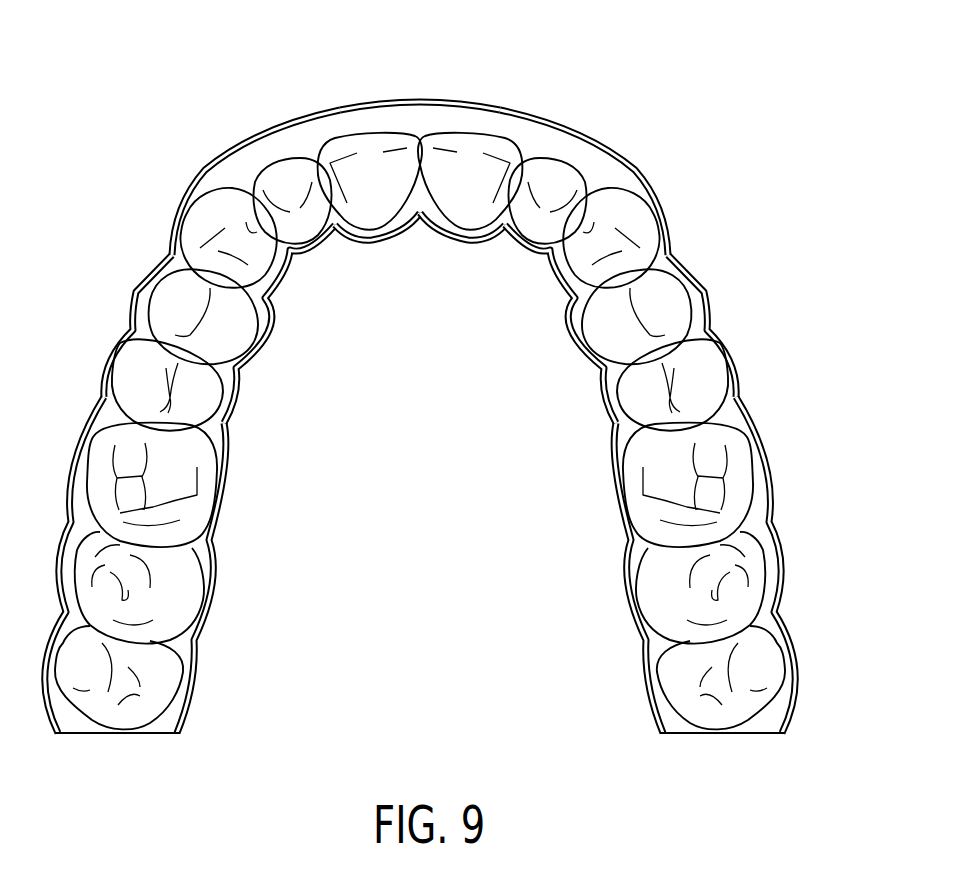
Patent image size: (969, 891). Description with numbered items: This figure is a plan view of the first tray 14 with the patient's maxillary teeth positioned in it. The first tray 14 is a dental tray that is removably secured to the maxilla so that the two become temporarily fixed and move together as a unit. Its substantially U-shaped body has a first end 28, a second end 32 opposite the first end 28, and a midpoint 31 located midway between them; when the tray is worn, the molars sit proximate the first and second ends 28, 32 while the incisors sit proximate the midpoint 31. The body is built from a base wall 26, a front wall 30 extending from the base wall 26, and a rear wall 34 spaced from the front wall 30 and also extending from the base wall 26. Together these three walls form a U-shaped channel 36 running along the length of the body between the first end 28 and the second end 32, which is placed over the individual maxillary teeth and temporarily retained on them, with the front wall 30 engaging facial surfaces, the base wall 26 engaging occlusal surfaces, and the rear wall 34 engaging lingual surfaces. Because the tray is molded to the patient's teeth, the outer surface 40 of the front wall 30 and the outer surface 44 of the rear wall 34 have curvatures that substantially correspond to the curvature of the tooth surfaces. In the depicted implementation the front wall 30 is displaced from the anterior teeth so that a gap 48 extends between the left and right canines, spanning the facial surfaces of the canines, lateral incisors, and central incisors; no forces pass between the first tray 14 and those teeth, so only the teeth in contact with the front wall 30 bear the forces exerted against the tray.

The first tray 14 is at (670, 250).
The base wall 26 is at (83, 717).
The first end 28 is at (188, 702).
The front wall 30 is at (130, 298).
The midpoint 31 is at (408, 100).
The second end 32 is at (797, 698).
The rear wall 34 is at (236, 375).
The U-shaped channel 36 is at (680, 720).
The outer surface of the front wall 40 is at (205, 154).
The outer surface of the rear wall 44 is at (372, 247).
The gap 48 is at (457, 130).